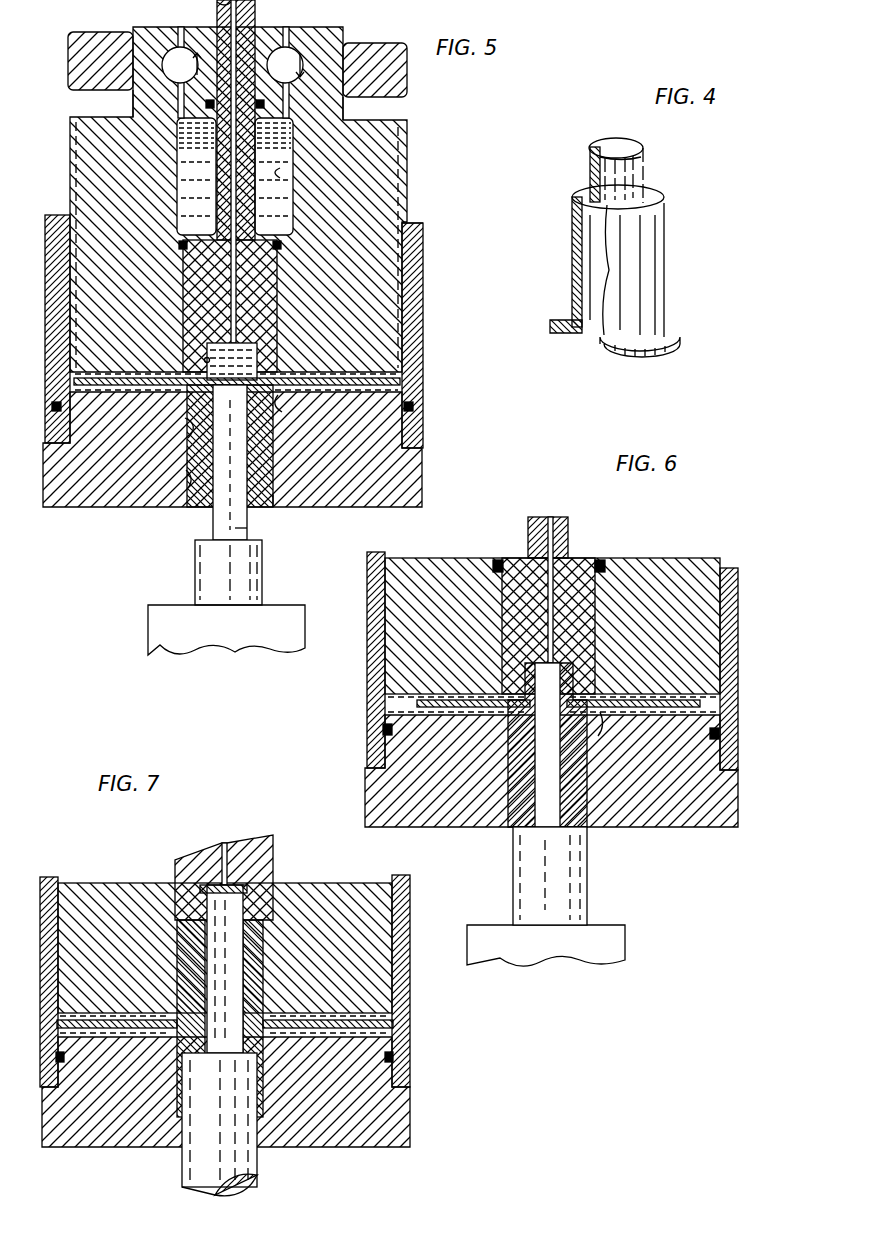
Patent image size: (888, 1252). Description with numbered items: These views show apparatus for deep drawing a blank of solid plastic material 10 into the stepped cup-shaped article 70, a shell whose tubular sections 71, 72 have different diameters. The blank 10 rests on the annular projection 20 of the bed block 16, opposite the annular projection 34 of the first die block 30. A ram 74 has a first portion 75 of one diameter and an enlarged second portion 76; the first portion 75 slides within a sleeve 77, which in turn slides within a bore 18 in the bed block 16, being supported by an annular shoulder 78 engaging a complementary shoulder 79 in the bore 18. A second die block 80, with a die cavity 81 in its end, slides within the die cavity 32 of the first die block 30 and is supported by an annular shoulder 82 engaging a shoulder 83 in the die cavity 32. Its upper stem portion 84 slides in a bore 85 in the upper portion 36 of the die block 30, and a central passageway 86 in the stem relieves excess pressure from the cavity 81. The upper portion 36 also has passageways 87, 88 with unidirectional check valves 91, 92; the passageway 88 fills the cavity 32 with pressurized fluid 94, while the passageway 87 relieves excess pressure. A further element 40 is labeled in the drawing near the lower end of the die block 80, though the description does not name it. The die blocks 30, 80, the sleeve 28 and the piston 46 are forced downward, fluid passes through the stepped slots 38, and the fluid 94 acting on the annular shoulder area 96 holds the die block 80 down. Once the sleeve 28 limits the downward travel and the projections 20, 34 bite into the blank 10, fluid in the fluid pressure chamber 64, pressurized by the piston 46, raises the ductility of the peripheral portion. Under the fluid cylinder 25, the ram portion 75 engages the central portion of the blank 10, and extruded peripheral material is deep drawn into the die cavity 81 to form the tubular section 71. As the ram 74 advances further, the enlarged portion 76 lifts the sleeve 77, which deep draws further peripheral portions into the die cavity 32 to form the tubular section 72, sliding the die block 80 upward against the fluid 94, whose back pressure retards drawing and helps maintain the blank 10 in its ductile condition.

In FIG. 5, the blank of solid plastic material 10 is at (386, 378).
In FIG. 6, the blank of solid plastic material 10 is at (440, 711).
In FIG. 5, the bed block 16 is at (406, 472).
In FIG. 5, the bore 18 is at (186, 425).
In FIG. 5, the annular projection 20 is at (281, 402).
In FIG. 6, the annular projection 20 is at (604, 716).
In FIG. 5, the fluid cylinder 25 is at (152, 620).
In FIG. 5, the sleeve 28 is at (410, 299).
In FIG. 5, the first die block 30 is at (390, 168).
In FIG. 6, the first die block 30 is at (678, 566).
In FIG. 5, the die cavity 32 is at (282, 170).
In FIG. 7, the die cavity 32 is at (264, 977).
In FIG. 5, the annular projection 34 is at (262, 378).
In FIG. 6, the annular projection 34 is at (598, 698).
In FIG. 5, the upper portion 36 is at (346, 46).
In FIG. 5, the stepped slots 38 is at (406, 223).
In FIG. 5, the piston 40 is at (212, 346).
In FIG. 5, the piston 46 is at (68, 78).
In FIG. 5, the fluid pressure chamber 64 is at (413, 407).
In FIG. 6, the fluid pressure chamber 64 is at (690, 717).
In FIG. 4, the stepped cup-shaped article 70 is at (616, 234).
In FIG. 4, the tubular section 71 is at (636, 172).
In FIG. 4, the tubular section 72 is at (665, 266).
In FIG. 5, the ram 74 is at (268, 536).
In FIG. 5, the first portion of ram 75 is at (226, 526).
In FIG. 6, the first portion of ram 75 is at (545, 816).
In FIG. 7, the first portion of ram 75 is at (217, 903).
In FIG. 5, the second portion of ram 76 is at (212, 579).
In FIG. 7, the second portion of ram 76 is at (256, 1173).
In FIG. 5, the sleeve 77 is at (256, 453).
In FIG. 6, the sleeve 77 is at (580, 786).
In FIG. 7, the sleeve 77 is at (252, 952).
In FIG. 5, the annular shoulder 78 is at (186, 478).
In FIG. 5, the shoulder 79 is at (266, 505).
In FIG. 5, the second die block 80 is at (266, 298).
In FIG. 6, the second die block 80 is at (592, 612).
In FIG. 7, the second die block 80 is at (258, 856).
In FIG. 5, the die cavity 81 is at (204, 361).
In FIG. 5, the annular shoulder 82 is at (283, 247).
In FIG. 5, the shoulder 83 is at (182, 251).
In FIG. 5, the upper stem portion 84 is at (258, 10).
In FIG. 6, the upper stem portion 84 is at (568, 523).
In FIG. 5, the bore 85 is at (214, 9).
In FIG. 5, the passageway 86 is at (239, 312).
In FIG. 6, the passageway 86 is at (545, 556).
In FIG. 5, the passageway 87 is at (138, 100).
In FIG. 5, the passageway 88 is at (346, 110).
In FIG. 5, the unidirectional check valve 91 is at (162, 62).
In FIG. 5, the unidirectional check valve 92 is at (304, 66).
In FIG. 5, the pressurized fluid 94 is at (190, 182).
In FIG. 5, the annular shoulder area 96 is at (272, 230).